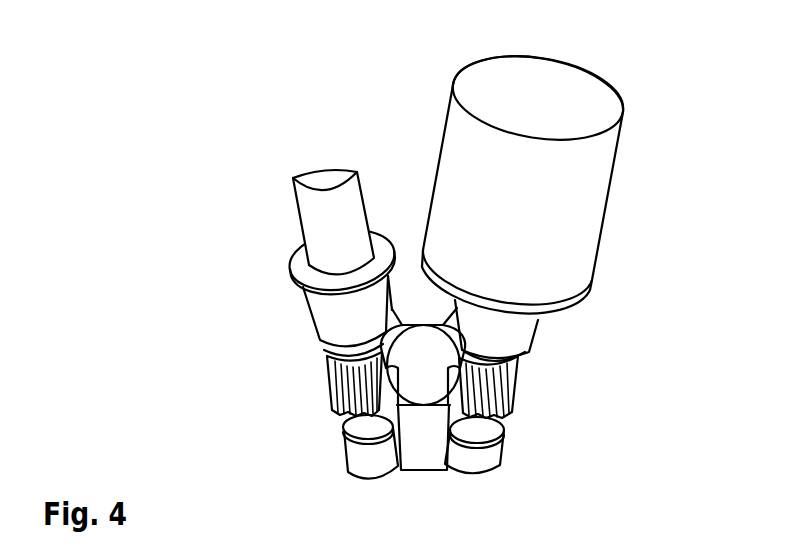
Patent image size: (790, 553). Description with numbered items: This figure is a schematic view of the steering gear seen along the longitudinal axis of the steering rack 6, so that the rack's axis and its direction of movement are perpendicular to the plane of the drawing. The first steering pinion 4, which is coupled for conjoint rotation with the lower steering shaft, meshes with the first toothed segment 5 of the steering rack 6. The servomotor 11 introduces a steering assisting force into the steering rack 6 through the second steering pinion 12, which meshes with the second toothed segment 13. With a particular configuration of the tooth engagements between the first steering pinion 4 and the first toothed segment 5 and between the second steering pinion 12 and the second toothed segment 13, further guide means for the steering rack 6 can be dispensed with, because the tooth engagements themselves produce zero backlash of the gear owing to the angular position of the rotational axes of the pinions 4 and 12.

The first steering pinion 4 is at (327, 368).
The first toothed segment 5 is at (386, 405).
The steering rack 6 is at (423, 405).
The servomotor 11 is at (570, 192).
The second steering pinion 12 is at (507, 388).
The second toothed segment 13 is at (455, 410).